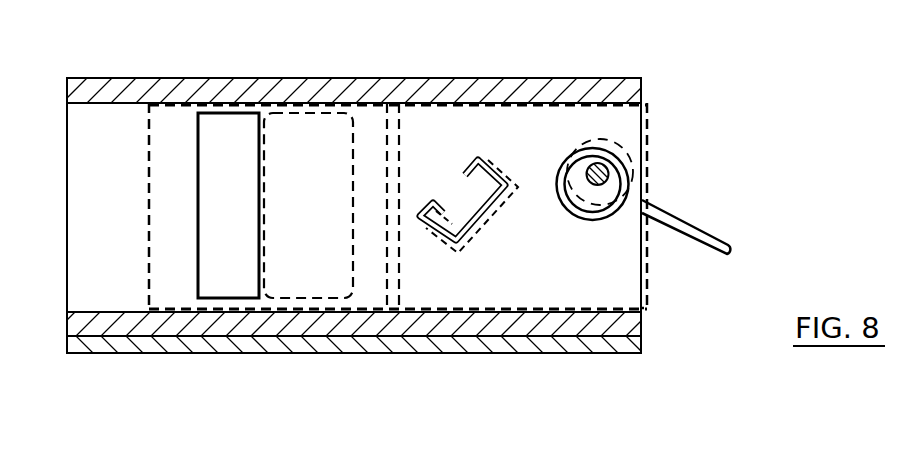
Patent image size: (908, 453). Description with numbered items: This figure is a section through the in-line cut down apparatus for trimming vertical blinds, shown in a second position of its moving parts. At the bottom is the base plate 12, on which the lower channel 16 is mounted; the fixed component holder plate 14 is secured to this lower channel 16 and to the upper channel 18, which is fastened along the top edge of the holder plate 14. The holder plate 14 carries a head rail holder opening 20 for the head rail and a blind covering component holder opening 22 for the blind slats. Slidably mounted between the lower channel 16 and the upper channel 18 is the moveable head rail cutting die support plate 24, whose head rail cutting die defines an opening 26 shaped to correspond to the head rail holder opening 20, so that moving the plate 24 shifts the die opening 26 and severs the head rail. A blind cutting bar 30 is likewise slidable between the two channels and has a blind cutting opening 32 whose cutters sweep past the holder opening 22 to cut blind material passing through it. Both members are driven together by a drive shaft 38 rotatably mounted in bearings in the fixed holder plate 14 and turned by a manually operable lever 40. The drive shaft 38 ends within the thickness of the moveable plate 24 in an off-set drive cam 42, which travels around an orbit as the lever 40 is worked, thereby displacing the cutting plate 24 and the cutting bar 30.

The base plate 12 is at (138, 340).
The fixed component holder plate 14 is at (125, 223).
The lower channel 16 is at (506, 322).
The upper channel 18 is at (128, 92).
The head rail holder opening 20 is at (432, 232).
The blind covering component holder opening 22 is at (199, 147).
The moveable head rail cutting die support plate 24 is at (648, 287).
The head rail cutting die opening 26 is at (488, 220).
The blind cutting bar 30 is at (148, 269).
The blind cutting opening 32 is at (351, 257).
The drive shaft 38 is at (587, 213).
The manually operable lever 40 is at (697, 228).
The off-set drive cam 42 is at (608, 178).